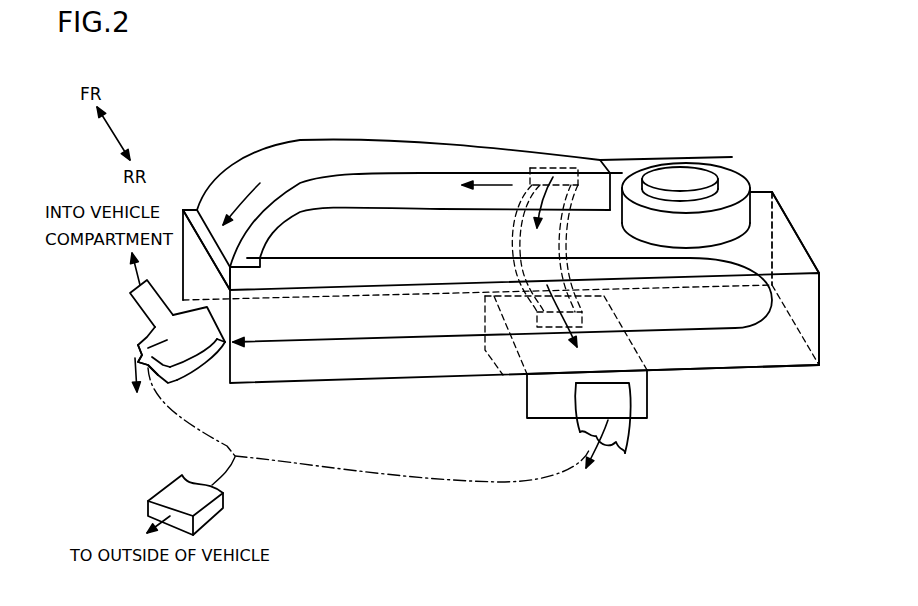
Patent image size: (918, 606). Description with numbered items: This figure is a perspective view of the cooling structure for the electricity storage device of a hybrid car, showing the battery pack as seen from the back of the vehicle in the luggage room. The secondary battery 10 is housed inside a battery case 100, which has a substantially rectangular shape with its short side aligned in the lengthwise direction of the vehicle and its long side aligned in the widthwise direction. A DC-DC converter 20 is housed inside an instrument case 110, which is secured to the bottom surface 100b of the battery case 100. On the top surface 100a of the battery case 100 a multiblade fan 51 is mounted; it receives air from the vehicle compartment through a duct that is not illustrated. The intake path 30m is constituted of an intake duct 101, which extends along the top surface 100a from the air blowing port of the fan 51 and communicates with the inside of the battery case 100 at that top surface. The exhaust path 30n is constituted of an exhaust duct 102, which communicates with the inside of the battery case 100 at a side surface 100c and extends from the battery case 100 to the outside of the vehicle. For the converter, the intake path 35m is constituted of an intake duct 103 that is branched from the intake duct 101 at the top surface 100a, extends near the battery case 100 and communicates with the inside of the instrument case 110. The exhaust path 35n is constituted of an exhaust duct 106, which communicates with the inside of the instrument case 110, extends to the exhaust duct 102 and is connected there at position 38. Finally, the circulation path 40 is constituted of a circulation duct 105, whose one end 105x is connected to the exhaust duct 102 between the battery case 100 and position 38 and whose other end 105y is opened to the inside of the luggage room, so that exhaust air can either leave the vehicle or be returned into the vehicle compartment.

The secondary battery 10 is at (755, 233).
The DC-DC converter 20 is at (555, 380).
The position 38 is at (237, 456).
The fan 51 is at (729, 172).
The battery case 100 is at (779, 202).
The top surface 100a is at (779, 230).
The bottom surface 100b is at (780, 346).
The side surface 100c is at (195, 260).
The intake duct 101 is at (464, 183).
The intake path 30m is at (333, 150).
The exhaust duct 102 is at (473, 338).
The exhaust path 30n is at (175, 372).
The intake duct 103 is at (485, 223).
The intake path 35m is at (511, 238).
The circulation duct 105 is at (145, 329).
The circulation path 40 is at (145, 329).
The one end 105x is at (111, 368).
The other end 105y is at (132, 286).
The exhaust duct 106 is at (662, 425).
The exhaust path 35n is at (632, 433).
The instrument case 110 is at (648, 391).